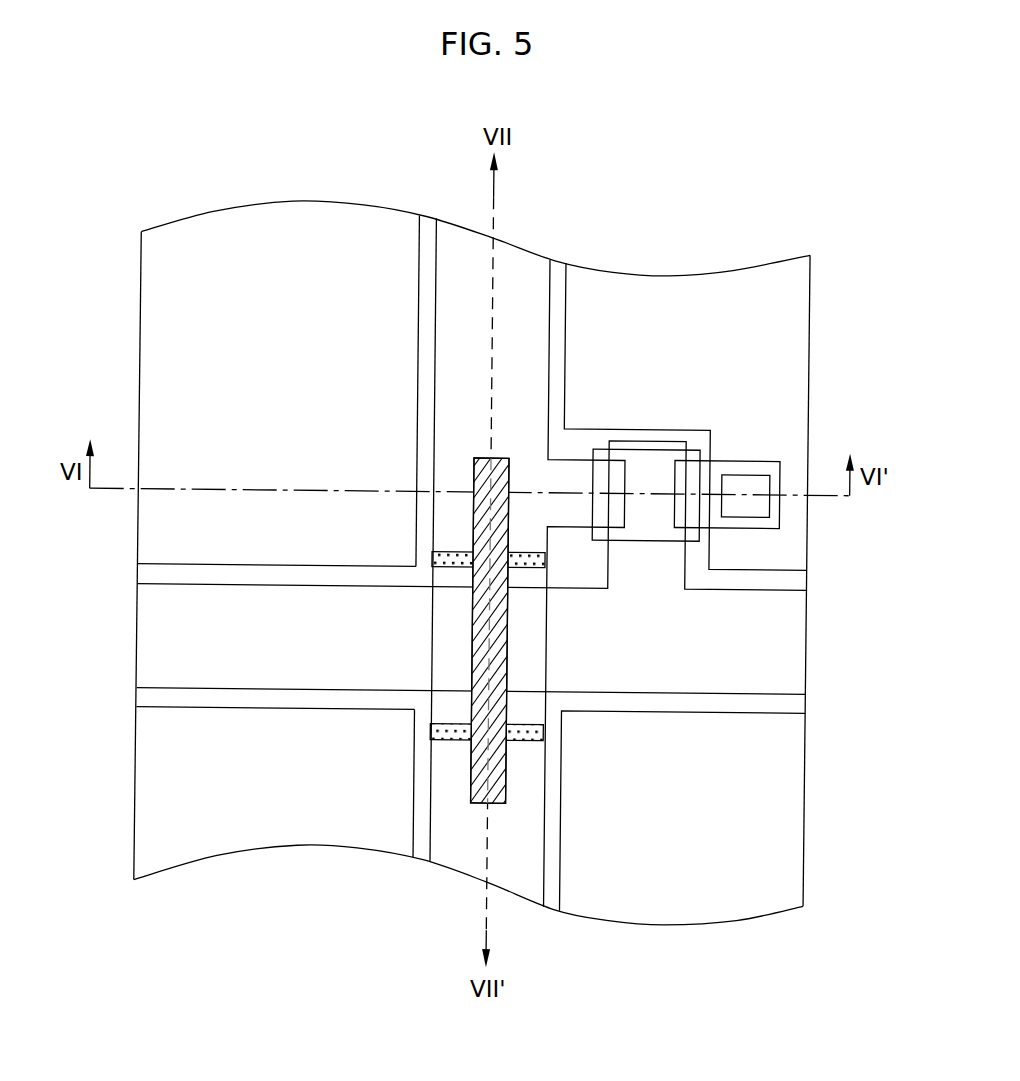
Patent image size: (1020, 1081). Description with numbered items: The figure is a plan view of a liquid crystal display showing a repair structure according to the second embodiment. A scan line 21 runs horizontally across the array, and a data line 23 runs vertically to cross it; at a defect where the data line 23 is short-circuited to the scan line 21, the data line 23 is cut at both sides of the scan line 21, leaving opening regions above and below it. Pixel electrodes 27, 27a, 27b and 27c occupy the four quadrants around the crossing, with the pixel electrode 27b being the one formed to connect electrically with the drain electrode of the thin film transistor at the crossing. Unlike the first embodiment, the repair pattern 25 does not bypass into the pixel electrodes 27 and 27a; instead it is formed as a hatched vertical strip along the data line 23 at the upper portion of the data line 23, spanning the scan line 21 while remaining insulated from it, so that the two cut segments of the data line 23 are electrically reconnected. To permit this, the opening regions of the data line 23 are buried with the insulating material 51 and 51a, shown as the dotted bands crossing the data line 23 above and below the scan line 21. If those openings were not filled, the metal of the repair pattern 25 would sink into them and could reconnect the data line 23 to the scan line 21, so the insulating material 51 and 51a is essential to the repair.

The scan line 21 is at (793, 648).
The data line 23 is at (527, 272).
The repair pattern 25 is at (477, 639).
The pixel electrode 27 is at (150, 363).
The pixel electrode 27a is at (150, 795).
The pixel electrode 27b is at (797, 360).
The pixel electrode 27c is at (797, 834).
The insulating material 51 is at (437, 557).
The insulating material 51a is at (437, 729).